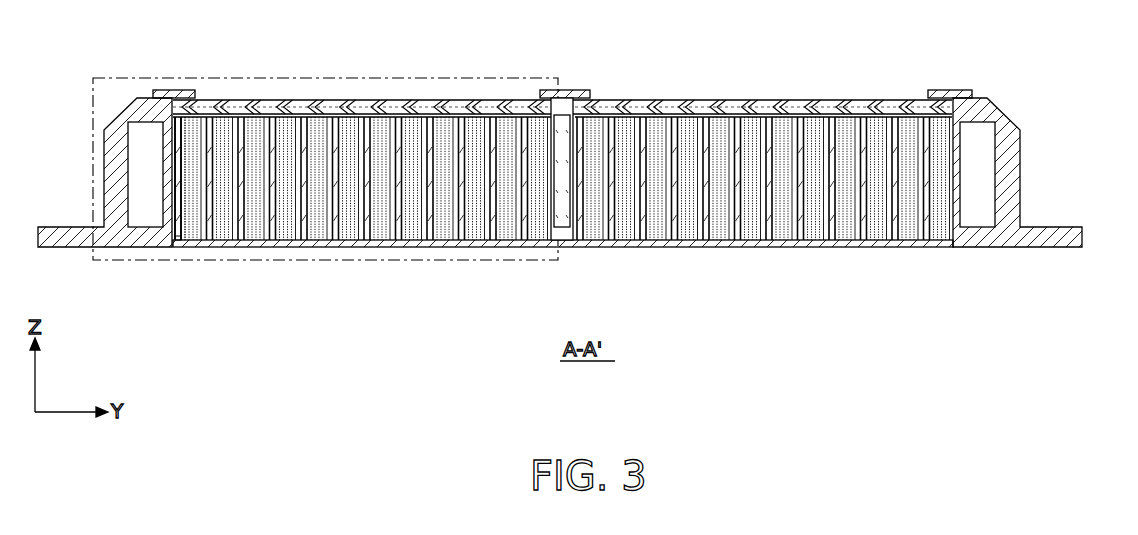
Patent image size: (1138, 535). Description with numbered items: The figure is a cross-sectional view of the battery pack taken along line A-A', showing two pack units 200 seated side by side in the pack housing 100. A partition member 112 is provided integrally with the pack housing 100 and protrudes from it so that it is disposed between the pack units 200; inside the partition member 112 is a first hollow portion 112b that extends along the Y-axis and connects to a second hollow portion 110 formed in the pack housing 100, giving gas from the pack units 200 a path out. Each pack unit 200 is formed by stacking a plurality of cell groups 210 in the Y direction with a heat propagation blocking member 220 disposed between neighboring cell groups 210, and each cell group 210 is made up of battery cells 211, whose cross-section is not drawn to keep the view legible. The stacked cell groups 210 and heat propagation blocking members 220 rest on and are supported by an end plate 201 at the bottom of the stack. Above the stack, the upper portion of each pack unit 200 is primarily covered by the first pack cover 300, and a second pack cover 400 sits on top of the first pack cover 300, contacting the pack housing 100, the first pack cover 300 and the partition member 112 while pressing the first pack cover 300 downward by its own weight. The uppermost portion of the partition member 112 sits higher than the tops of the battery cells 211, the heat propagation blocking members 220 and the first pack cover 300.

The pack housing 100 is at (1005, 154).
The second hollow portion 110 is at (144, 184).
The partition member 112 is at (562, 100).
The first hollow portion 112b is at (562, 144).
The pack unit 200 is at (550, 276).
The end plate 201 is at (954, 237).
The cell group 210 is at (182, 242).
The battery cell 211 is at (185, 133).
The heat propagation blocking member 220 is at (205, 123).
The first pack cover 300 is at (893, 100).
The second pack cover 400 is at (963, 90).